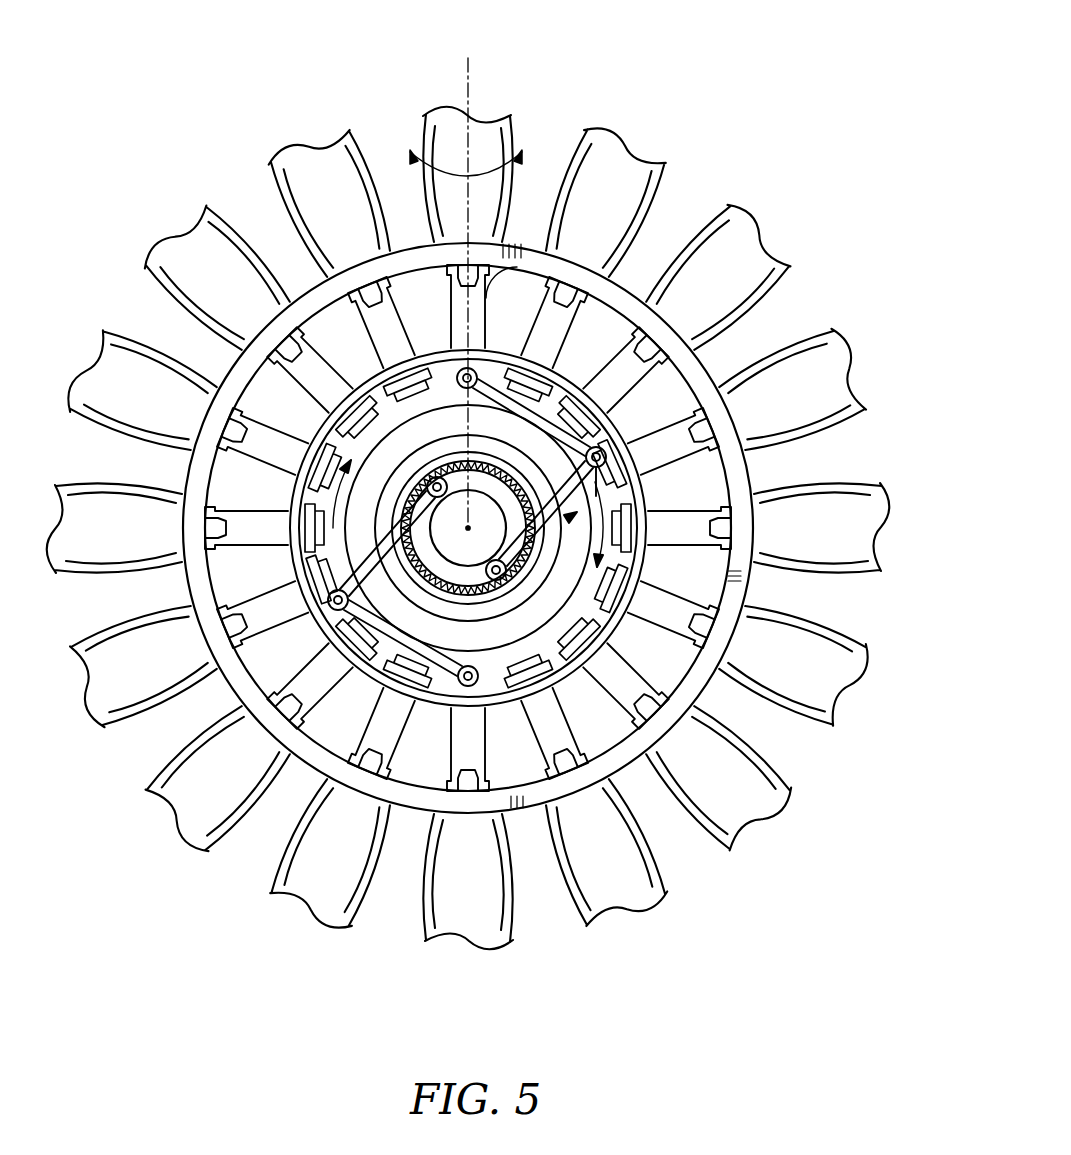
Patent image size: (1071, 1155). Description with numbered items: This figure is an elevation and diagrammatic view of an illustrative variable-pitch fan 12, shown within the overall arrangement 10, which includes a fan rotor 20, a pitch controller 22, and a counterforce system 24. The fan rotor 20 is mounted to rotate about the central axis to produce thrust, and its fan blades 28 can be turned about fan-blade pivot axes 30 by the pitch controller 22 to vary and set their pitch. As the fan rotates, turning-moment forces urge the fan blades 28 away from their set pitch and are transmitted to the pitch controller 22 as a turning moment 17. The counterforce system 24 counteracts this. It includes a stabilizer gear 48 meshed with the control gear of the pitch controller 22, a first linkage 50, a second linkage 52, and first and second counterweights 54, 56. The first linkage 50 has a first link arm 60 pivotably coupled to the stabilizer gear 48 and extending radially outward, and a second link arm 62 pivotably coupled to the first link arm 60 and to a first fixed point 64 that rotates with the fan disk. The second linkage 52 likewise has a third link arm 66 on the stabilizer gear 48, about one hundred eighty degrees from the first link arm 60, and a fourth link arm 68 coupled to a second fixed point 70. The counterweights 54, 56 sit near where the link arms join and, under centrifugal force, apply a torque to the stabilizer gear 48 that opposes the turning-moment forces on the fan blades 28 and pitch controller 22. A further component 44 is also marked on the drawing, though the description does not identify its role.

The variable vane system 10 is at (818, 82).
The variable-pitch fan 12 is at (787, 172).
The turning moment 17 is at (607, 515).
The fan rotor 20 is at (288, 217).
The pitch controller 22 is at (333, 437).
The counterforce system 24 is at (369, 545).
The fan blades 28 is at (420, 190).
The fan-blade pivot axes 30 is at (478, 78).
The outer case 44 is at (518, 262).
The stabilizer gear 48 is at (507, 600).
The first linkage 50 is at (613, 420).
The second linkage 52 is at (352, 636).
The first counterweight 54 is at (623, 470).
The second counterweight 56 is at (333, 607).
The first link arm 60 is at (613, 543).
The second link arm 62 is at (547, 403).
The first fixed point 64 is at (495, 380).
The third link arm 66 is at (350, 622).
The fourth link arm 68 is at (388, 652).
The second fixed point 70 is at (466, 692).